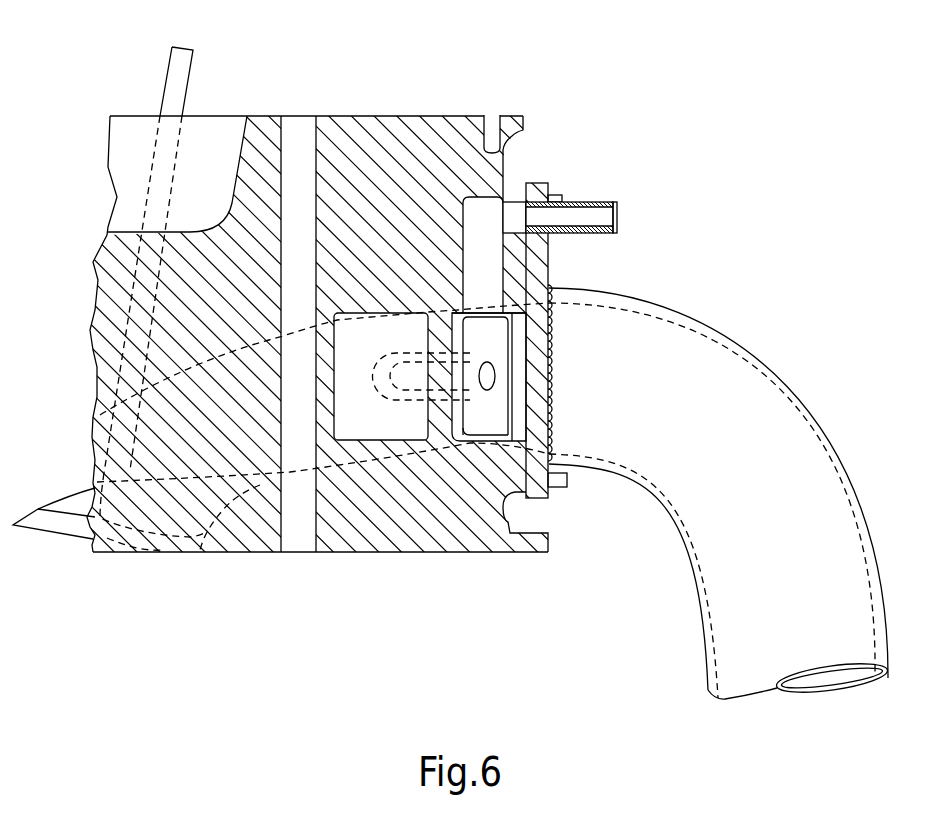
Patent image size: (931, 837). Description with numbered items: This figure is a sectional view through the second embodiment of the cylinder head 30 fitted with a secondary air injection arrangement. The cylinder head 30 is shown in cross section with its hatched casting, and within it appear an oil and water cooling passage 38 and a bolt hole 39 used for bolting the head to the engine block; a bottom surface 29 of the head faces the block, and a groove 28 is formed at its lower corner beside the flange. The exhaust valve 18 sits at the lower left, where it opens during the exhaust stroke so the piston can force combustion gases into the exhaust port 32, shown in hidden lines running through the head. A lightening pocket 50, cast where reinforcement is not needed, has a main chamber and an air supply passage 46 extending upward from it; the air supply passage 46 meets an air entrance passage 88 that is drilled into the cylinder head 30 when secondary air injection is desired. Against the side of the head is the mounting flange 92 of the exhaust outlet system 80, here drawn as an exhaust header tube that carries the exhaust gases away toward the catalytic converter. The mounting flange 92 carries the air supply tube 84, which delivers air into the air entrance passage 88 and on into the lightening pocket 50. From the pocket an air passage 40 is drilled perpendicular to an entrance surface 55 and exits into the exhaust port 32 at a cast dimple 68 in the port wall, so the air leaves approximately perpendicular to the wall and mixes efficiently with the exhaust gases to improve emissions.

The exhaust valve 18 is at (55, 523).
The groove 28 is at (507, 520).
The bottom surface 29 is at (413, 553).
The cylinder head 30 is at (397, 113).
The exhaust port 32 is at (218, 455).
The oil and water cooling passage 38 is at (343, 317).
The bolt hole 39 is at (297, 553).
The air passage 40 is at (490, 376).
The air supply passage 46 is at (480, 237).
The lightening pocket 50 is at (483, 423).
The entrance surface 55 is at (498, 413).
The dimple 68 is at (382, 392).
The exhaust outlet system 80 is at (721, 324).
The air supply tube 84 is at (596, 201).
The air entrance passage 88 is at (515, 213).
The mounting flange 92 is at (549, 266).